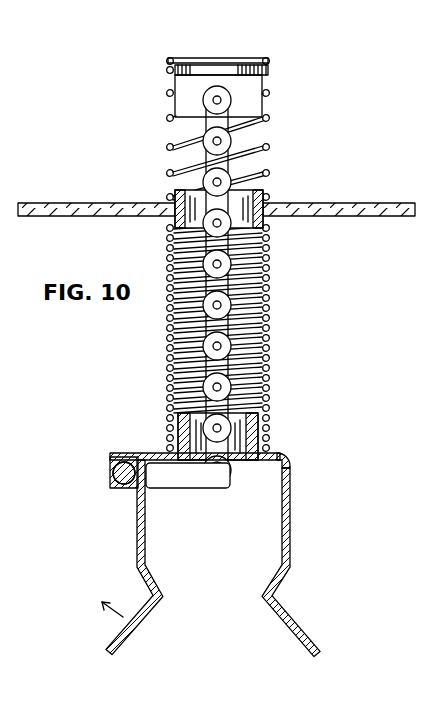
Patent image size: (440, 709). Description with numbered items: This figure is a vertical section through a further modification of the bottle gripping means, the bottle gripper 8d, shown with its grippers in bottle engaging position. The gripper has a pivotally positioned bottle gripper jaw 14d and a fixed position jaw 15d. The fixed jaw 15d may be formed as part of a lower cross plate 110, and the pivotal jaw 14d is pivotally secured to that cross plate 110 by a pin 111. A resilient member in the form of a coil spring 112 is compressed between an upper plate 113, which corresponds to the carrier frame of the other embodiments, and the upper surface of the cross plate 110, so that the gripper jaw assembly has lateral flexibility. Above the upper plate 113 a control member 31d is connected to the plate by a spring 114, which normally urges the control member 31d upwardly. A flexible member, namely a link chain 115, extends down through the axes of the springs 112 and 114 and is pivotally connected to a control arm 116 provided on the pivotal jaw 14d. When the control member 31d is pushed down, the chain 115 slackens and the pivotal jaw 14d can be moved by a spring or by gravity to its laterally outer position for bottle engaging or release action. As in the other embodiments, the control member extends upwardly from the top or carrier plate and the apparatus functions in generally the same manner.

The control member 31d is at (274, 57).
The spring 114 is at (270, 147).
The upper plate 113 is at (328, 213).
The link chain 115 is at (222, 285).
The bottle gripper 8d is at (251, 285).
The coil spring 112 is at (246, 325).
The lower cross plate 110 is at (270, 464).
The pin 111 is at (113, 488).
The control arm 116 is at (183, 472).
The pivotally positioned bottle gripper jaw 14d is at (137, 550).
The fixed position jaw 15d is at (290, 550).